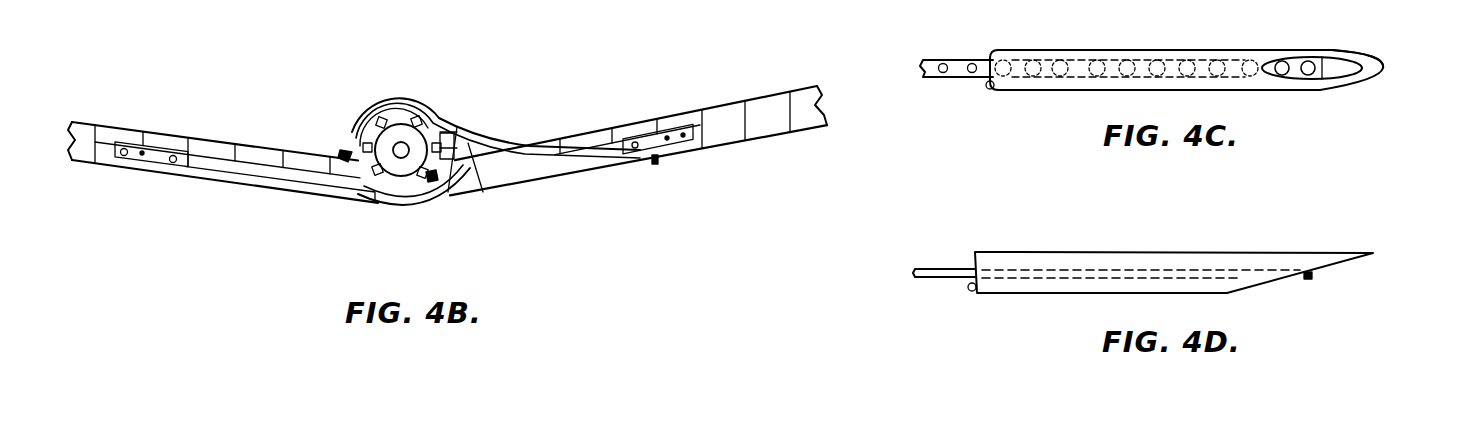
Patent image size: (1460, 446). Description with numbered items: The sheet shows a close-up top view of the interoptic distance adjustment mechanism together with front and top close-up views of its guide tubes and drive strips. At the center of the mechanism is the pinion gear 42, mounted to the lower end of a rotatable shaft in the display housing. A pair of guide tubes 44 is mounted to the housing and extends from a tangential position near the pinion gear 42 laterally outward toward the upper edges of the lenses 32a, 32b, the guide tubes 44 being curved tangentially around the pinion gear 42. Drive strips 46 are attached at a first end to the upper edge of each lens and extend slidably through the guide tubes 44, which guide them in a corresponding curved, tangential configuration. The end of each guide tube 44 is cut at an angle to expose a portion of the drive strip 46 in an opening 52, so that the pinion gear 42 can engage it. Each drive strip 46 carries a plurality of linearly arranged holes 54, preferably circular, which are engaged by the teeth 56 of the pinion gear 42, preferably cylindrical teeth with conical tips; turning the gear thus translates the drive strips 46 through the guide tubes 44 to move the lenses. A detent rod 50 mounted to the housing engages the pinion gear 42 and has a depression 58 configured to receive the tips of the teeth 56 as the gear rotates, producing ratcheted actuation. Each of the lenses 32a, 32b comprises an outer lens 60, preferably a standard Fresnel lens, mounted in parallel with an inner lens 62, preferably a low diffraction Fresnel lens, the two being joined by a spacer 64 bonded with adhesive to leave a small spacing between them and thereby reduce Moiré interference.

In FIG. 4B, the lens 32a is at (97, 165).
In FIG. 4B, the lens 32b is at (775, 137).
In FIG. 4B, the pinion gear 42 is at (400, 170).
In FIG. 4B, the guide tube 44 is at (483, 132).
In FIG. 4C, the guide tube 44 is at (1225, 50).
In FIG. 4D, the guide tube 44 is at (1275, 262).
In FIG. 4B, the drive strip 46 is at (345, 155).
In FIG. 4C, the drive strip 46 is at (1295, 62).
In FIG. 4D, the drive strip 46 is at (1308, 279).
In FIG. 4B, the detent rod 50 is at (437, 127).
In FIG. 4C, the opening 52 is at (1358, 63).
In FIG. 4B, the holes 54 is at (636, 143).
In FIG. 4C, the holes 54 is at (1322, 62).
In FIG. 4B, the teeth 56 is at (380, 187).
In FIG. 4B, the depression 58 is at (453, 140).
In FIG. 4B, the outer lens 60 is at (203, 181).
In FIG. 4B, the inner lens 62 is at (226, 141).
In FIG. 4B, the spacer 64 is at (103, 138).